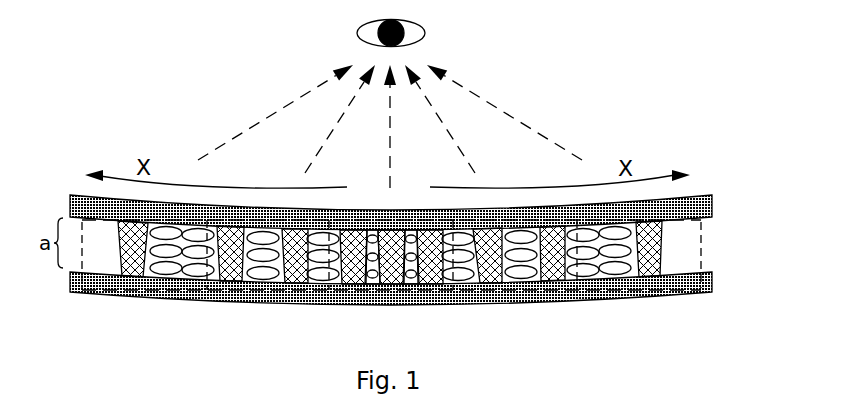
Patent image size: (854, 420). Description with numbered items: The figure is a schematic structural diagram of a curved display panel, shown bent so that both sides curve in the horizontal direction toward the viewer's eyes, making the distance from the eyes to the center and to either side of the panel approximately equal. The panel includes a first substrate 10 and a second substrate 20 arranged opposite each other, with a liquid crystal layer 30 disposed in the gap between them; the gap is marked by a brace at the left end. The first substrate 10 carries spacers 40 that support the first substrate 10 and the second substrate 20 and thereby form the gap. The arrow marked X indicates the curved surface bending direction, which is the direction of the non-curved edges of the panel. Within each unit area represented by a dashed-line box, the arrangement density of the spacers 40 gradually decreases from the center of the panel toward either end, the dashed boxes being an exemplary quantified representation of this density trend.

The first substrate 10 is at (692, 203).
The second substrate 20 is at (692, 278).
The liquid crystal layer 30 is at (614, 274).
The spacers 40 is at (550, 272).